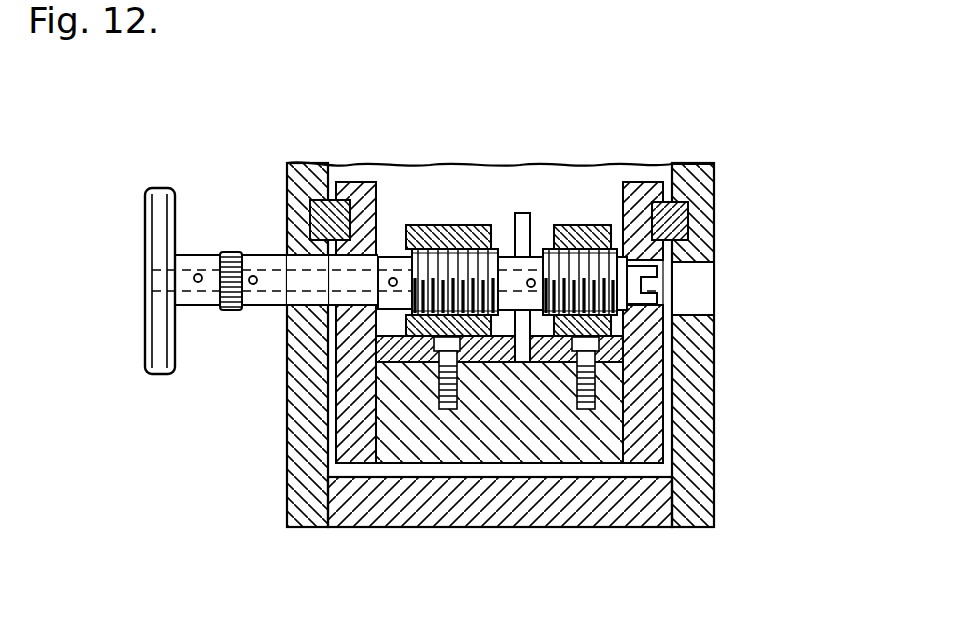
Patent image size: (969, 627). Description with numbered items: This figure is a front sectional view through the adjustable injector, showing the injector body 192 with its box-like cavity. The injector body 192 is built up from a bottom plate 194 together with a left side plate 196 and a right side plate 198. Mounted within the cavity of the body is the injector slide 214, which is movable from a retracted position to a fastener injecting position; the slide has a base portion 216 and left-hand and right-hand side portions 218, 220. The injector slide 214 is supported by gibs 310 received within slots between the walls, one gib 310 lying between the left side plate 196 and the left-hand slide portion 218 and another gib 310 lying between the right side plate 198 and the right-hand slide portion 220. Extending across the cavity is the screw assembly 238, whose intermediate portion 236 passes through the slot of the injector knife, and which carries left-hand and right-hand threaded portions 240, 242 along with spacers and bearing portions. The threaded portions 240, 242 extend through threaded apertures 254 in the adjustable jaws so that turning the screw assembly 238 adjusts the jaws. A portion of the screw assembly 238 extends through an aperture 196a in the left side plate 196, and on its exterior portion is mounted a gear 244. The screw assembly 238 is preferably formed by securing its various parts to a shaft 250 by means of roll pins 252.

The injector body 192 is at (785, 244).
The bottom plate 194 is at (467, 519).
The left side plate 196 is at (291, 413).
The aperture 196a is at (287, 311).
The right side plate 198 is at (698, 381).
The injector slide 214 is at (400, 484).
The base portion 216 is at (577, 455).
The left-hand side portion 218 is at (342, 435).
The right-hand side portion 220 is at (652, 441).
The intermediate portion 236 is at (545, 250).
The screw assembly 238 is at (668, 286).
The left-hand threaded portion 240 is at (468, 226).
The right-hand threaded portion 242 is at (585, 226).
The gear 244 is at (226, 311).
The shaft 250 is at (152, 297).
The roll pins 252 is at (201, 269).
The threaded apertures 254 is at (394, 255).
The gibs 310 is at (312, 215).